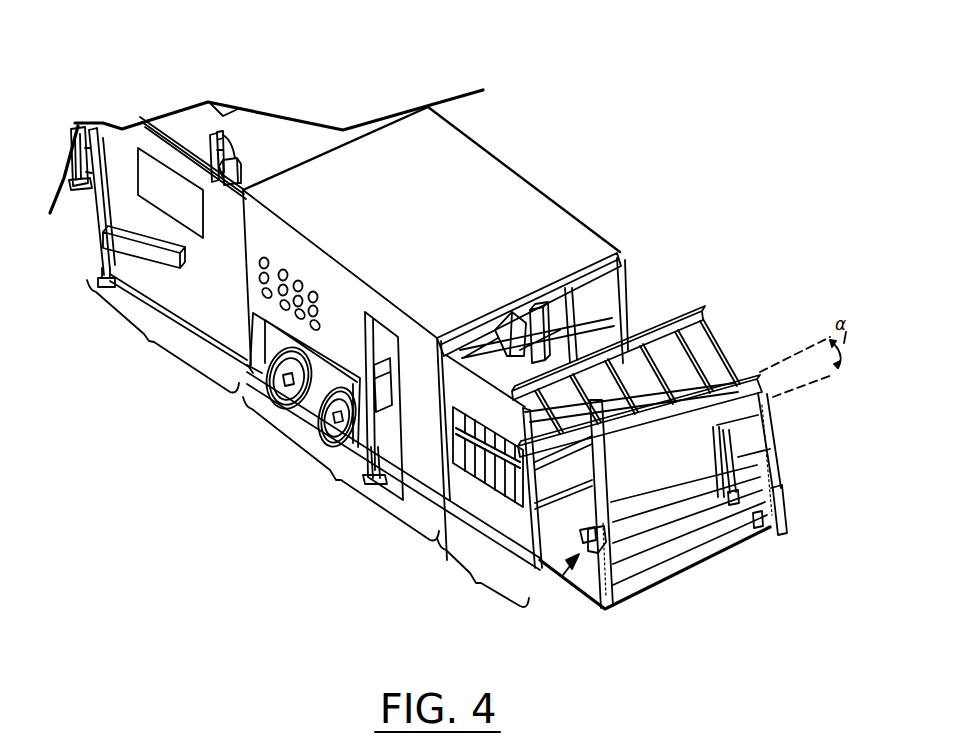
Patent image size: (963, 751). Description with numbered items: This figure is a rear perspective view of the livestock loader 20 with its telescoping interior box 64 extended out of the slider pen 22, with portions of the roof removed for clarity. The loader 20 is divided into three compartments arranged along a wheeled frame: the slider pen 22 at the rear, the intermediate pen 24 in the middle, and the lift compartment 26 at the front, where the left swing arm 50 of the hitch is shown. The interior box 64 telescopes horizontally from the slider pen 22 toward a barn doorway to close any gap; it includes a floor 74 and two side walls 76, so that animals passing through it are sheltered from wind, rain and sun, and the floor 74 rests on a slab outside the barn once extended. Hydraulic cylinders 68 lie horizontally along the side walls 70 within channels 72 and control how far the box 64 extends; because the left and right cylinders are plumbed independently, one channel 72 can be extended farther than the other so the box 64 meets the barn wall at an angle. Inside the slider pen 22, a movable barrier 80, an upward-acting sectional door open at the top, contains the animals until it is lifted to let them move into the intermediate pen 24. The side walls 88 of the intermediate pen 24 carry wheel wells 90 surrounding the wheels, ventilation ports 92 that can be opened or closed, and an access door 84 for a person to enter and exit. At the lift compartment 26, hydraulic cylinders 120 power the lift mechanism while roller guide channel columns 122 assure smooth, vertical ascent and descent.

The livestock loader 20 is at (458, 80).
The slider pen 22 is at (483, 574).
The intermediate pen 24 is at (341, 469).
The lift compartment 26 is at (163, 336).
The left swing arm 50 is at (108, 195).
The telescoping interior box 64 is at (565, 572).
The hydraulic cylinders 68 is at (645, 378).
The side walls 70 is at (546, 568).
The channels 72 is at (740, 457).
The floor 74 is at (707, 550).
The side walls 76 is at (742, 488).
The barrier 80 is at (578, 390).
The access door 84 is at (378, 342).
The side walls 88 is at (262, 230).
The wheel wells 90 is at (330, 373).
The ports 92 is at (298, 288).
The hydraulic cylinders 120 is at (209, 150).
The roller guide channel columns 122 is at (238, 170).